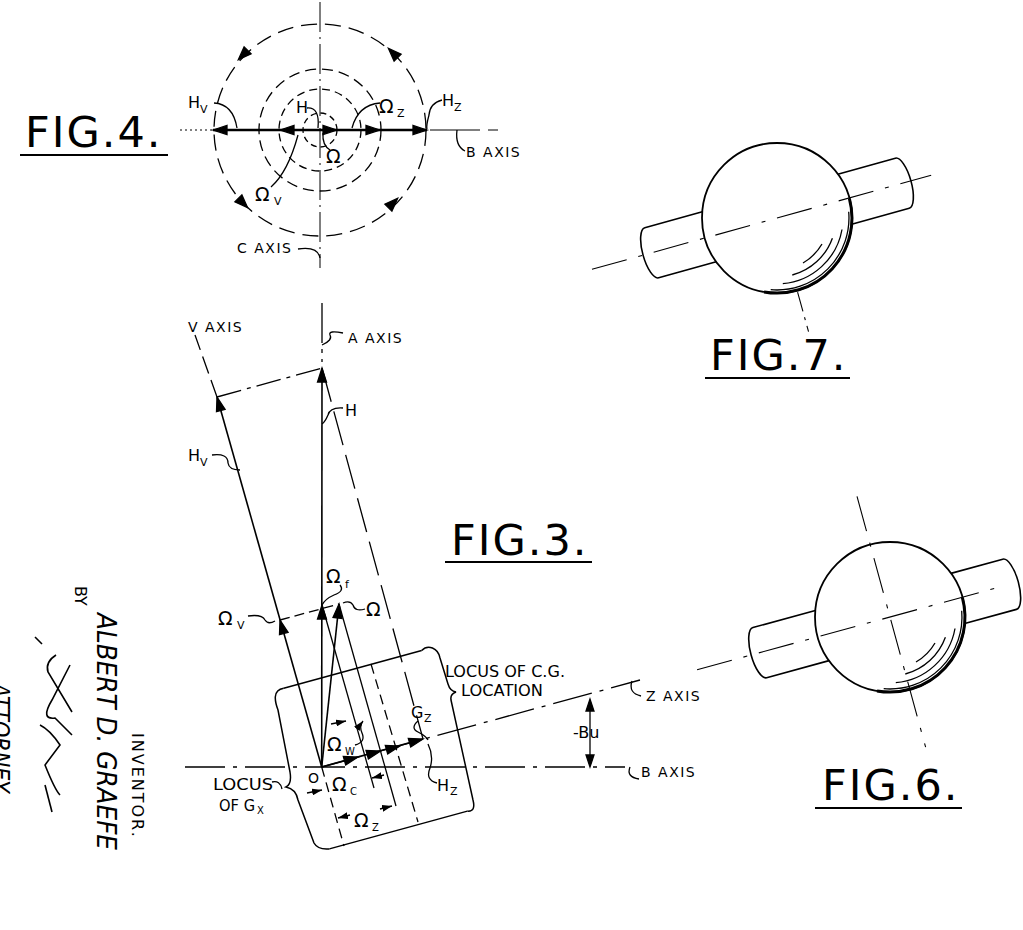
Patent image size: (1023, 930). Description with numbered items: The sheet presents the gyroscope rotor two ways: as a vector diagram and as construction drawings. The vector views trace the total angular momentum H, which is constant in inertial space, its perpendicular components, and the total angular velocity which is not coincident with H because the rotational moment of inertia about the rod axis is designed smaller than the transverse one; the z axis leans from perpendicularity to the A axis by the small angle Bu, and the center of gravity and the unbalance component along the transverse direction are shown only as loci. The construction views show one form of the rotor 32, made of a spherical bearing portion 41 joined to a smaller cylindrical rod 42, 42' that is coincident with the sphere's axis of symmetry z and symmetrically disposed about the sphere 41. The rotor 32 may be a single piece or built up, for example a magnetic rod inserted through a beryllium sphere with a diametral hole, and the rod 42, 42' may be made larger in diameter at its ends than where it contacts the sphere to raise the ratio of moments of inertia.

In FIG. 7, the rotor 32 is at (714, 160).
In FIG. 6, the rotor 32 is at (831, 557).
In FIG. 7, the spherical bearing portion 41 is at (797, 148).
In FIG. 6, the spherical bearing portion 41 is at (858, 678).
In FIG. 7, the cylindrical rod 42 is at (676, 233).
In FIG. 6, the cylindrical rod 42 is at (786, 632).
In FIG. 7, the cylindrical rod 42' is at (878, 172).
In FIG. 6, the cylindrical rod 42' is at (987, 575).